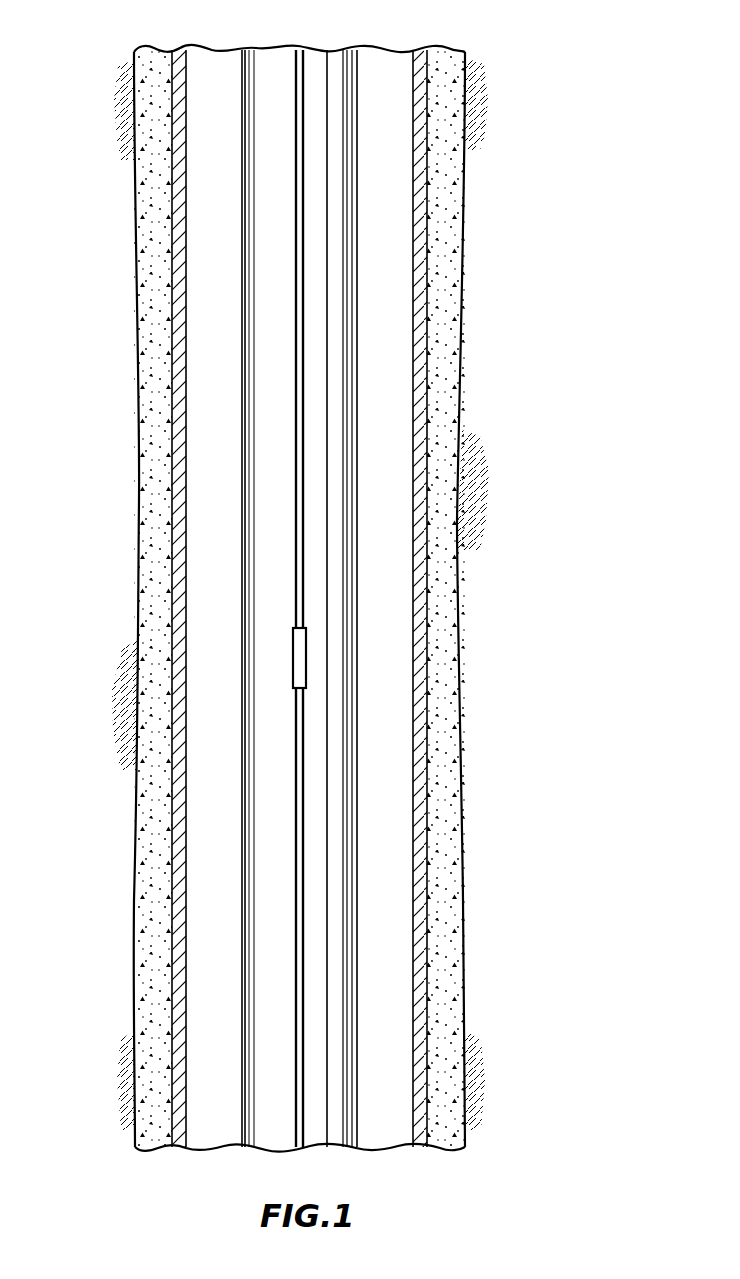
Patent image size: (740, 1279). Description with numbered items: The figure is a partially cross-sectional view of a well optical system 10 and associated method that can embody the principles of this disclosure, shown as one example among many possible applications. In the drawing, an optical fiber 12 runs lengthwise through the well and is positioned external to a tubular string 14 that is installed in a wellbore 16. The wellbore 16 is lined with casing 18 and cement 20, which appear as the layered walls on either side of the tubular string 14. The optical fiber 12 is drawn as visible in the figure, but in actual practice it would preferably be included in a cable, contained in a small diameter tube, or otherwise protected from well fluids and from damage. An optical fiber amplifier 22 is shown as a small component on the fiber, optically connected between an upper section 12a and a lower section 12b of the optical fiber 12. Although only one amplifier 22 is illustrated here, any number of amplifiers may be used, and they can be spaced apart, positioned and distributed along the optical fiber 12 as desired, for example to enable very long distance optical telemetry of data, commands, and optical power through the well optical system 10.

The well optical system 10 is at (576, 80).
The optical fiber 12 is at (304, 598).
The optical fiber section 12a is at (303, 301).
The optical fiber section 12b is at (309, 907).
The tubular string 14 is at (357, 777).
The wellbore 16 is at (136, 392).
The casing 18 is at (168, 843).
The cement 20 is at (133, 919).
The optical fiber amplifier 22 is at (306, 647).